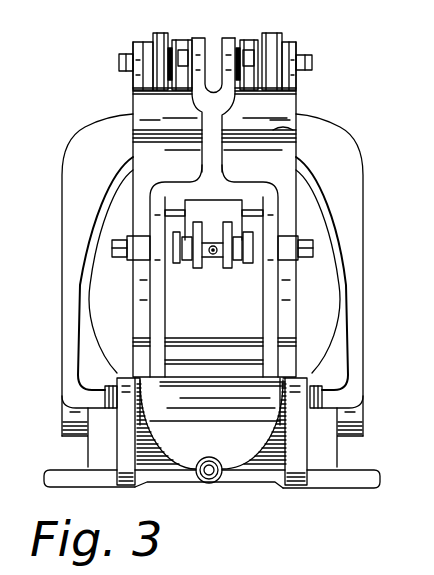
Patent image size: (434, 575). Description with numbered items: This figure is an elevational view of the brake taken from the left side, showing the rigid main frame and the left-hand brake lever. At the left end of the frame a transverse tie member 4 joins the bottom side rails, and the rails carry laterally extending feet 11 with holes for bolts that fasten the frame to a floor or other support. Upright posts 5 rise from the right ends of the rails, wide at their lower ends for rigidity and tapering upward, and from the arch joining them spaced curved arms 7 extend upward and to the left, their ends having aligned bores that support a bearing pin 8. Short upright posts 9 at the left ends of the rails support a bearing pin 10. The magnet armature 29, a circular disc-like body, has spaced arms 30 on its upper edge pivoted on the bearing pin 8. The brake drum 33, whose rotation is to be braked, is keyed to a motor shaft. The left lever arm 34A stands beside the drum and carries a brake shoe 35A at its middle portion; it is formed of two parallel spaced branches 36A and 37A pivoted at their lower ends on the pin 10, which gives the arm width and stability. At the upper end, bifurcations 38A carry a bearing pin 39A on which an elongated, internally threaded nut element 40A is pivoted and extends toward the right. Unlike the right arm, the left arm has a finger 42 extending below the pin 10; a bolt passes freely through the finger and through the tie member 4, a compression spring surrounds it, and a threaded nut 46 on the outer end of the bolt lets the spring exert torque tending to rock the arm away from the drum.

The tie member 4 is at (259, 475).
The upright posts 5 is at (62, 252).
The curved arms 7 is at (158, 40).
The bearing pin 8 is at (312, 63).
The short upright posts 9 is at (117, 444).
The bearing pin 10 is at (312, 391).
The feet 11 is at (50, 470).
The magnet armature 29 is at (337, 270).
The spaced arms 30 is at (143, 43).
The brake drum 33 is at (293, 108).
The left lever arm 34A is at (222, 169).
The brake shoe 35A is at (298, 140).
The arm branch 36A is at (163, 299).
The arm branch 37A is at (264, 302).
The bifurcations 38A is at (196, 46).
The bearing pin 39A is at (253, 55).
The nut element 40A is at (213, 78).
The finger 42 is at (235, 442).
The threaded nut 46 is at (212, 478).